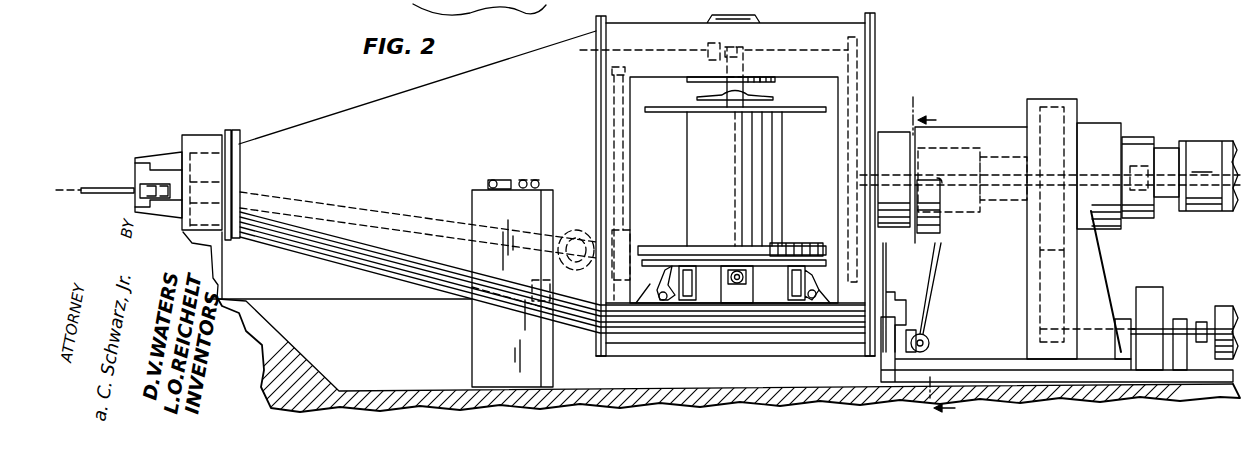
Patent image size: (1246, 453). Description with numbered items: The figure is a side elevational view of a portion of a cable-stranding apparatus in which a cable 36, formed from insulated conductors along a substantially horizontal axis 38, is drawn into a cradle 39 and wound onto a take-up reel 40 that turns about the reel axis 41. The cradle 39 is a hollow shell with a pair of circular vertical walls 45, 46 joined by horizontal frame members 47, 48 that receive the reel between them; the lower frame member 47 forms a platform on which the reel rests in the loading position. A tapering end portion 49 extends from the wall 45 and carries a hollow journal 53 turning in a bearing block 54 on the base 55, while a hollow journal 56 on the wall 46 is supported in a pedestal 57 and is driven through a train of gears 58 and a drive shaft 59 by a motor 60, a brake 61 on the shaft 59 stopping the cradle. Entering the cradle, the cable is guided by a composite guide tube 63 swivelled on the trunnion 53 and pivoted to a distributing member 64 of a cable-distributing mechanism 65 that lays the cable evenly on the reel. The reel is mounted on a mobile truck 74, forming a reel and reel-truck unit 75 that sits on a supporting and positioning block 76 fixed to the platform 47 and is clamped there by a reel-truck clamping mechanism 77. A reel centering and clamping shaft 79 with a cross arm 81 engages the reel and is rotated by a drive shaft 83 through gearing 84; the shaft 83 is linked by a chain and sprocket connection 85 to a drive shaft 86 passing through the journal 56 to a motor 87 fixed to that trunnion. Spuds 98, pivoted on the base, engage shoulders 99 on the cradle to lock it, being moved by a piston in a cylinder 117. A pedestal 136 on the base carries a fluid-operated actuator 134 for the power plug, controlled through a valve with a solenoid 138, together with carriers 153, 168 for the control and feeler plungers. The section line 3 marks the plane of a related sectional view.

The section line 3- 3 is at (940, 258).
The cable 36 is at (663, 250).
The horizontal axis 38 is at (78, 186).
The cradle 39 is at (409, 85).
The take-up reel 40 is at (770, 174).
The reel axis 41 is at (735, 169).
The circular vertical wall 45 is at (594, 22).
The circular vertical wall 46 is at (878, 32).
The lower frame member 47 is at (823, 324).
The upper frame member 48 is at (652, 32).
The tapering end portion 49 is at (340, 106).
The hollow journal 53 is at (193, 135).
The bearing block 54 is at (226, 262).
The base 55 is at (300, 352).
The hollow journal 56 is at (1006, 158).
The pedestal 57 is at (955, 243).
The train of gears 58 is at (1040, 278).
The drive shaft 59 is at (1166, 324).
The motor 60 is at (1226, 306).
The brake 61 is at (1142, 285).
The composite guide tube 63 is at (379, 213).
The distributing member 64 is at (629, 220).
The cable-distributing mechanism 65 is at (626, 176).
The mobile truck 74 is at (777, 243).
The reel and mobile reel-truck unit 75 is at (708, 278).
The supporting and positioning block 76 is at (740, 303).
The reel-truck clamping mechanism 77 is at (656, 303).
The reel centering and clamping shaft 79 is at (735, 93).
The cross arm 81 is at (756, 95).
The drive shaft 83 is at (813, 50).
The gearing 84 is at (737, 43).
The chain and sprocket connection 85 is at (878, 56).
The drive shaft 86 is at (1085, 172).
The motor 87 is at (1189, 146).
The spuds 98 is at (892, 275).
The abutments or shoulders 99 is at (888, 275).
The cylinder 117 is at (930, 342).
The fluid-operated actuator 134 is at (499, 176).
The pedestal 136 is at (478, 326).
The solenoid 138 is at (479, 7).
The carrier 153 is at (522, 179).
The carrier 168 is at (536, 180).